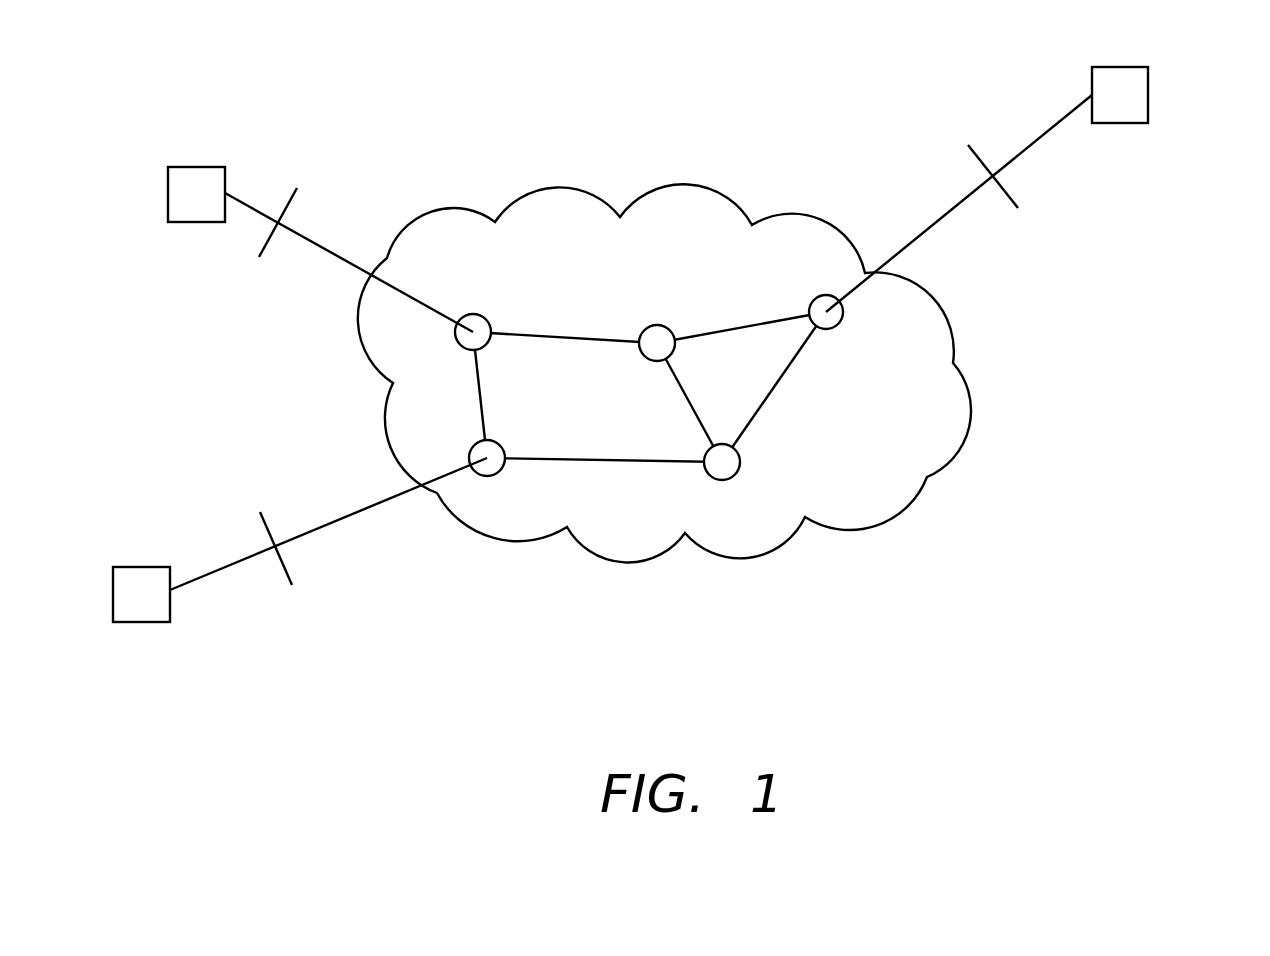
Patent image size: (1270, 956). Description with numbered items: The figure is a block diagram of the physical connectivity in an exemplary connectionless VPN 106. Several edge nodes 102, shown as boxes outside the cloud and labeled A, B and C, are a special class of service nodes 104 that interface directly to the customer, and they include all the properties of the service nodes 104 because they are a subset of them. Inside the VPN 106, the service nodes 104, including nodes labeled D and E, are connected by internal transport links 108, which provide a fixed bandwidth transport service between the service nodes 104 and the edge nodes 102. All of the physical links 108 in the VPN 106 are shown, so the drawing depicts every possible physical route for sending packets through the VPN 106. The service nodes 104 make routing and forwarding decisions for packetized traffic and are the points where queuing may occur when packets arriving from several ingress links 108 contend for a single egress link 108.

The edge node 102 is at (193, 167).
The service node 104 is at (654, 280).
The VPN 106 is at (970, 430).
The internal transport link 108 is at (712, 447).